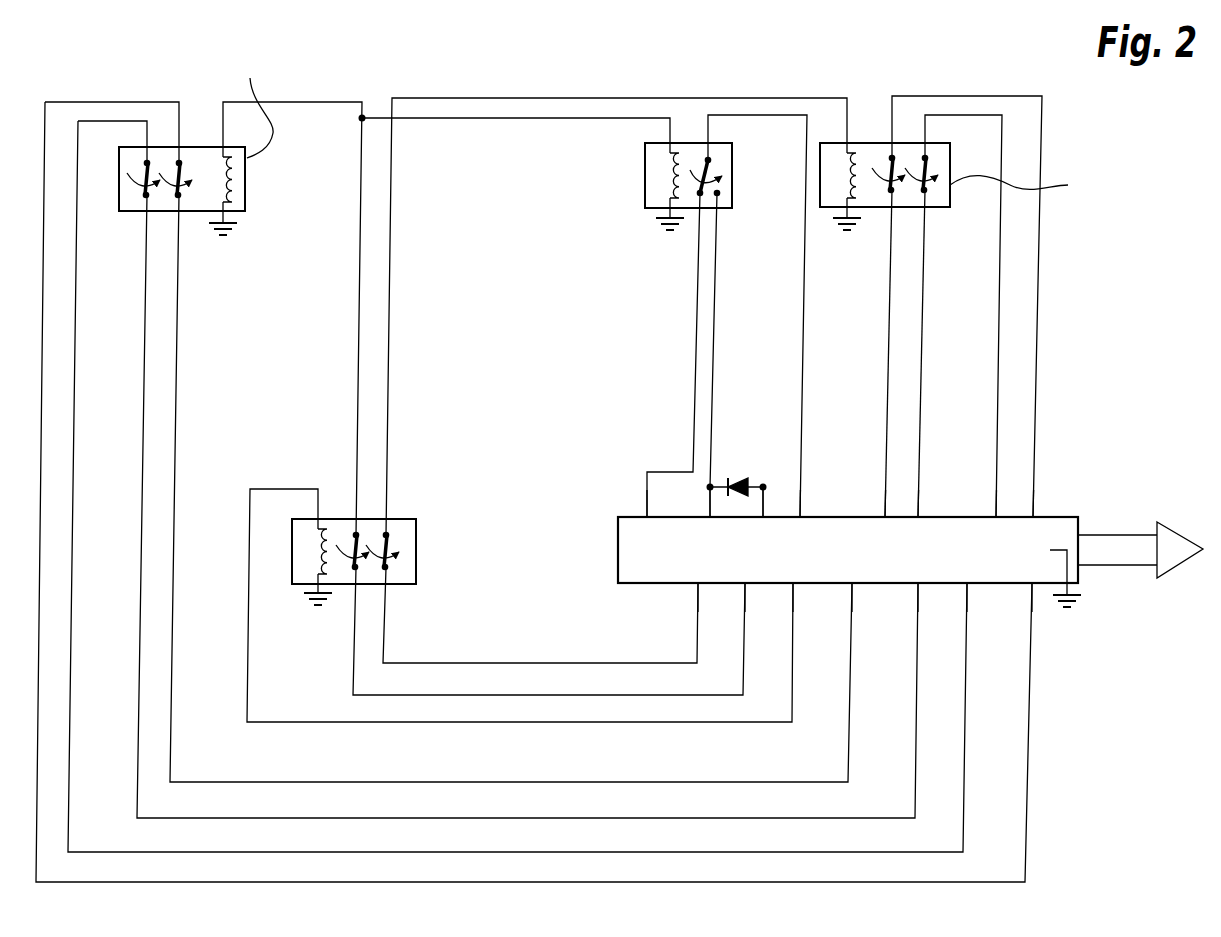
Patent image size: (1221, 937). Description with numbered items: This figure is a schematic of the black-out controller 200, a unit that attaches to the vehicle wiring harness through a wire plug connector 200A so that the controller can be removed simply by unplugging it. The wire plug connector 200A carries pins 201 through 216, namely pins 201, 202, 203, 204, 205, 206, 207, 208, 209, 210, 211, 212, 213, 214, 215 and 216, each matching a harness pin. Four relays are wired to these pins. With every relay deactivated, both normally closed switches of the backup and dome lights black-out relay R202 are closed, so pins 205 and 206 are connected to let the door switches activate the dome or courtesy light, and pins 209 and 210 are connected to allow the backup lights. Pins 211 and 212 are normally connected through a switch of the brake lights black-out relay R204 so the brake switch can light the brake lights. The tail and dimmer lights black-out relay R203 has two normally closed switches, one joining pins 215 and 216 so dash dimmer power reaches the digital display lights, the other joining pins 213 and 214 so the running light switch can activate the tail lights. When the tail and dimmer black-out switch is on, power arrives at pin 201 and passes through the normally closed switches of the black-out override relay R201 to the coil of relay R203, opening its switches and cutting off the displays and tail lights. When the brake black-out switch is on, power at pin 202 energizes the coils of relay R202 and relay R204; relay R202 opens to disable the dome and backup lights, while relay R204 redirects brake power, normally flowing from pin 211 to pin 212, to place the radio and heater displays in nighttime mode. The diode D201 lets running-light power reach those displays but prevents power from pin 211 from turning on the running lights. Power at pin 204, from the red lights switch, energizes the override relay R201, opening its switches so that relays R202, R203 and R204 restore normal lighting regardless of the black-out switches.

The black-out controller 200 is at (1090, 340).
The wire plug connector 200A is at (1040, 517).
The pin 201 is at (700, 588).
The pin 202 is at (744, 588).
The pin 203 is at (1048, 575).
The pin 204 is at (792, 588).
The pin 205 is at (1032, 588).
The pin 206 is at (851, 588).
The pin 207 is at (711, 515).
The pin 208 is at (759, 515).
The pin 209 is at (919, 588).
The pin 210 is at (969, 588).
The pin 211 is at (647, 515).
The pin 212 is at (804, 515).
The pin 213 is at (933, 515).
The pin 214 is at (991, 515).
The pin 215 is at (884, 515).
The pin 216 is at (1032, 515).
The diode D201 is at (738, 475).
The black-out override relay R201 is at (384, 562).
The backup and dome lights black-out relay R202 is at (213, 191).
The tail and dimmer lights black-out relay R203 is at (905, 187).
The brake lights black-out relay R204 is at (658, 186).